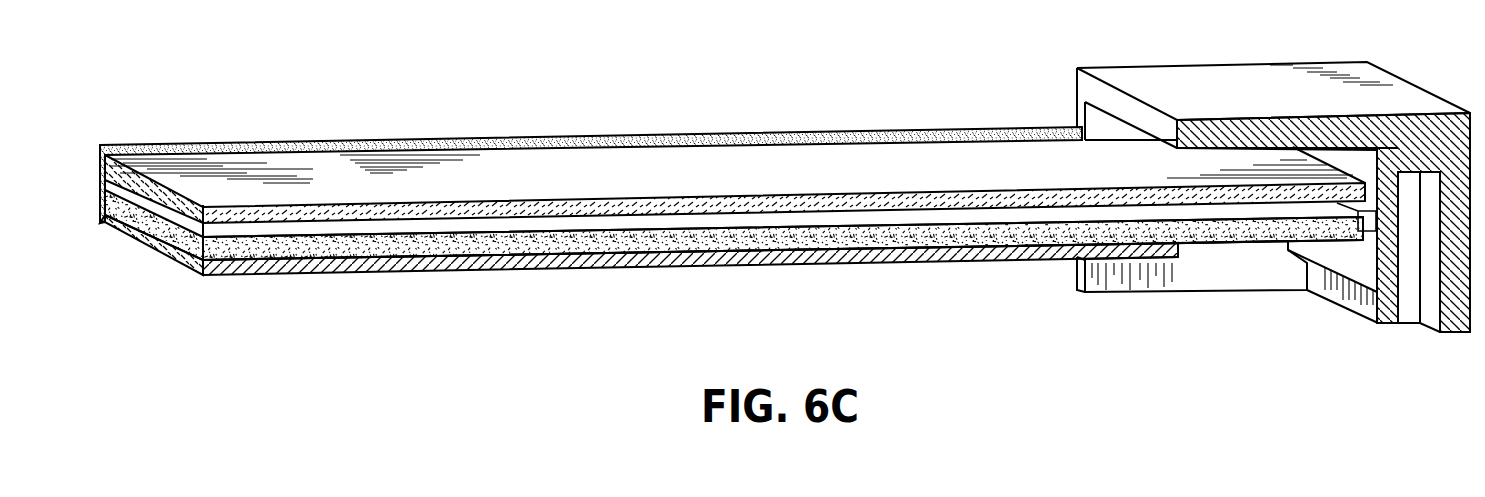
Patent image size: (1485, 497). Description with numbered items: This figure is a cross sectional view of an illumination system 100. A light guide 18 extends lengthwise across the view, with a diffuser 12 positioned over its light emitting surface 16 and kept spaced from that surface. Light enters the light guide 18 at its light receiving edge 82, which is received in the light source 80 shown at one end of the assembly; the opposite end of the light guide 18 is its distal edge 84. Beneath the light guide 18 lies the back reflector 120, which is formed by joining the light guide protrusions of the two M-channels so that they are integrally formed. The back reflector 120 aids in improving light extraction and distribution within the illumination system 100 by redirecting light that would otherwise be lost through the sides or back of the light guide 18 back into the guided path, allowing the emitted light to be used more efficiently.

The illumination system 100 is at (930, 45).
The diffuser 12 is at (667, 183).
The light emitting surface 16 is at (758, 232).
The light guide 18 is at (670, 232).
The back reflector 120 is at (347, 267).
The distal edge 84 is at (165, 210).
The light receiving edge 82 is at (1320, 230).
The light source 80 is at (1368, 230).